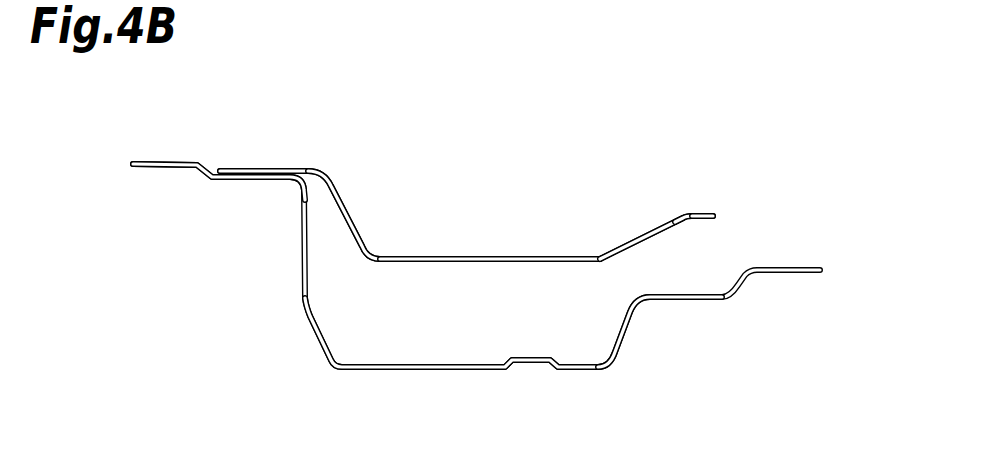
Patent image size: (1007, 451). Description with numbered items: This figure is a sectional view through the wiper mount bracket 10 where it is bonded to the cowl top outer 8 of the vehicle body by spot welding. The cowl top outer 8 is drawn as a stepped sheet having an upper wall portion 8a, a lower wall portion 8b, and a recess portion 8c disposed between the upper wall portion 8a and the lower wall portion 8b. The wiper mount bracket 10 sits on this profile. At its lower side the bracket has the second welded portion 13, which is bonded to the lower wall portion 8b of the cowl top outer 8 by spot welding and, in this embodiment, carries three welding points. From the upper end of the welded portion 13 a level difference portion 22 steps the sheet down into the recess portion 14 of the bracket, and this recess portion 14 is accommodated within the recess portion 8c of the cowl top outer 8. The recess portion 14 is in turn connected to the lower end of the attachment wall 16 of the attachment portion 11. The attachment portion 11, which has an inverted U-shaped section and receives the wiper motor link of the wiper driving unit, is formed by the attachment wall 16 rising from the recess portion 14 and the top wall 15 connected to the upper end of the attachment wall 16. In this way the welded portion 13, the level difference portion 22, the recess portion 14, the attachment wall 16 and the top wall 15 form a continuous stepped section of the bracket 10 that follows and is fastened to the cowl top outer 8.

The cowl top outer 8 is at (605, 376).
The upper wall portion 8a is at (690, 299).
The lower wall portion 8b is at (270, 181).
The recess portion 8c is at (411, 368).
The wiper mount bracket 10 is at (317, 163).
The attachment portion 11 is at (677, 210).
The welded portion 13 is at (268, 169).
The recess portion 14 is at (480, 258).
The top wall 15 is at (705, 214).
The attachment wall 16 is at (638, 236).
The level difference portion 22 is at (345, 208).